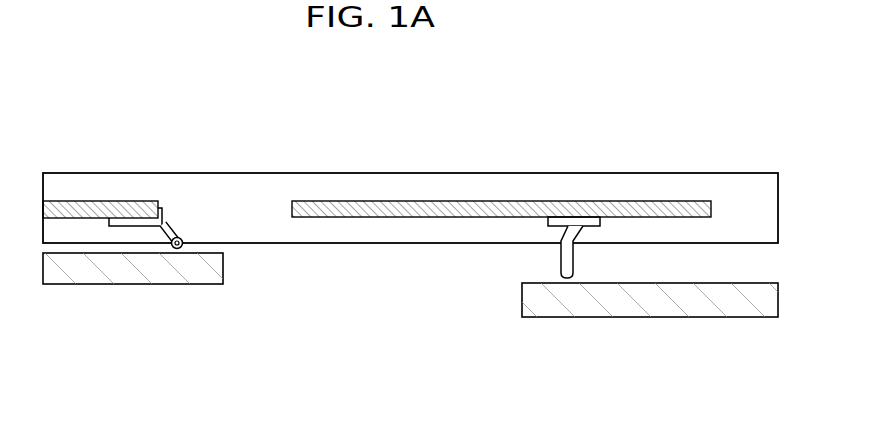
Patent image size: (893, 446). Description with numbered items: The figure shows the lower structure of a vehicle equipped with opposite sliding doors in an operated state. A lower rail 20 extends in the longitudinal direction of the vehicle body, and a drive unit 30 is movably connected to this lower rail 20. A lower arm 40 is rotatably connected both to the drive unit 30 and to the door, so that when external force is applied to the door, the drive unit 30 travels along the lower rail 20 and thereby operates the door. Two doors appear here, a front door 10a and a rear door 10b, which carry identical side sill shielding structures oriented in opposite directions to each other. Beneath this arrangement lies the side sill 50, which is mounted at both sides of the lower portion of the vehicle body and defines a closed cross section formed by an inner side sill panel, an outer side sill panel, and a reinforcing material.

The front door 10a is at (159, 275).
The rear door 10b is at (618, 307).
The lower rail 20 is at (385, 210).
The drive unit 30 is at (563, 222).
The lower arm 40 is at (560, 256).
The side sill 50 is at (628, 183).